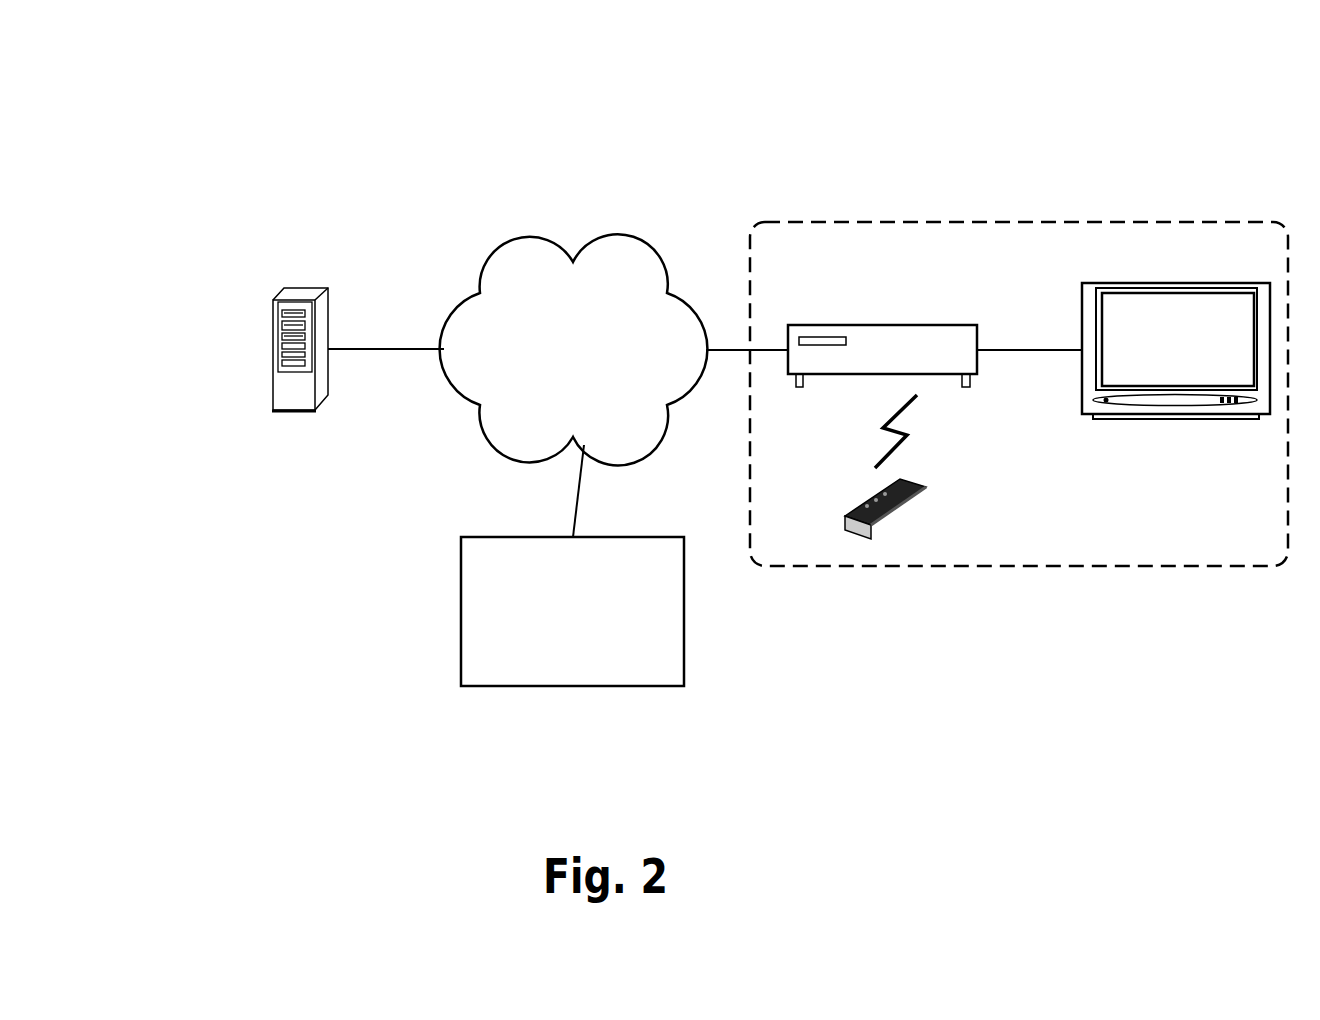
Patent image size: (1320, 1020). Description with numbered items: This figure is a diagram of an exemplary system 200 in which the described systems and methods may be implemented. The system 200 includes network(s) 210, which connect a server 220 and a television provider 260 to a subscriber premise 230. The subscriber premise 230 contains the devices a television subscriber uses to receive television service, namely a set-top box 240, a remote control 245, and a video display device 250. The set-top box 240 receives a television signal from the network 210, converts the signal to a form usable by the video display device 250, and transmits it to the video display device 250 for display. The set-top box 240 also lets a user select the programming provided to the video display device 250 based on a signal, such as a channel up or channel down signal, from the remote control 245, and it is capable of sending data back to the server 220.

The system 200 is at (164, 69).
The network(s) 210 is at (593, 374).
The server 220 is at (328, 288).
The subscriber premise 230 is at (897, 220).
The set-top box 240 is at (822, 325).
The remote control 245 is at (862, 498).
The video display device 250 is at (1082, 297).
The television provider 260 is at (461, 550).